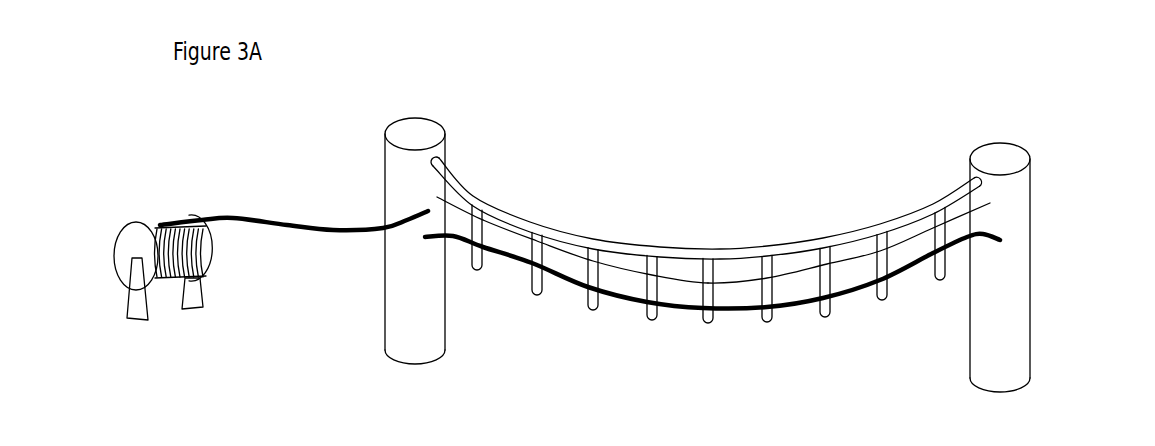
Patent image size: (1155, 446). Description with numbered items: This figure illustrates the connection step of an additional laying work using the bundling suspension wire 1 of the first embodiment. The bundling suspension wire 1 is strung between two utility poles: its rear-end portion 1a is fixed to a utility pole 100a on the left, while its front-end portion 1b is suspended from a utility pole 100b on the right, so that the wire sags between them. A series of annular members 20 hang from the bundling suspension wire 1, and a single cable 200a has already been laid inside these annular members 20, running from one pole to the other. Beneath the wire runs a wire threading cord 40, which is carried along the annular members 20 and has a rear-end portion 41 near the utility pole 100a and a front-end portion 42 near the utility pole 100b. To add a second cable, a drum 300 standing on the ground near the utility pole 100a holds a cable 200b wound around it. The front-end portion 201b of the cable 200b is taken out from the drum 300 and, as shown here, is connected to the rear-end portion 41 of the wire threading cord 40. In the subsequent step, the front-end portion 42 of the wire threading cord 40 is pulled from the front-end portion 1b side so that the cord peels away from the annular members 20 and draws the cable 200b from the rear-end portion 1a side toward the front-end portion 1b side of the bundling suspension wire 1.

The bundling suspension wire 1 is at (872, 218).
The rear-end portion 1a is at (452, 163).
The front-end portion 1b is at (980, 172).
The annular members 20 is at (593, 310).
The wire threading cord 40 is at (958, 215).
The rear-end portion 41 is at (448, 195).
The front-end portion 42 is at (988, 210).
The utility pole 100a is at (413, 128).
The utility pole 100b is at (1015, 155).
The cable 200a is at (680, 310).
The cable 200b is at (322, 230).
The front-end portion 201b is at (437, 197).
The drum 300 is at (165, 212).